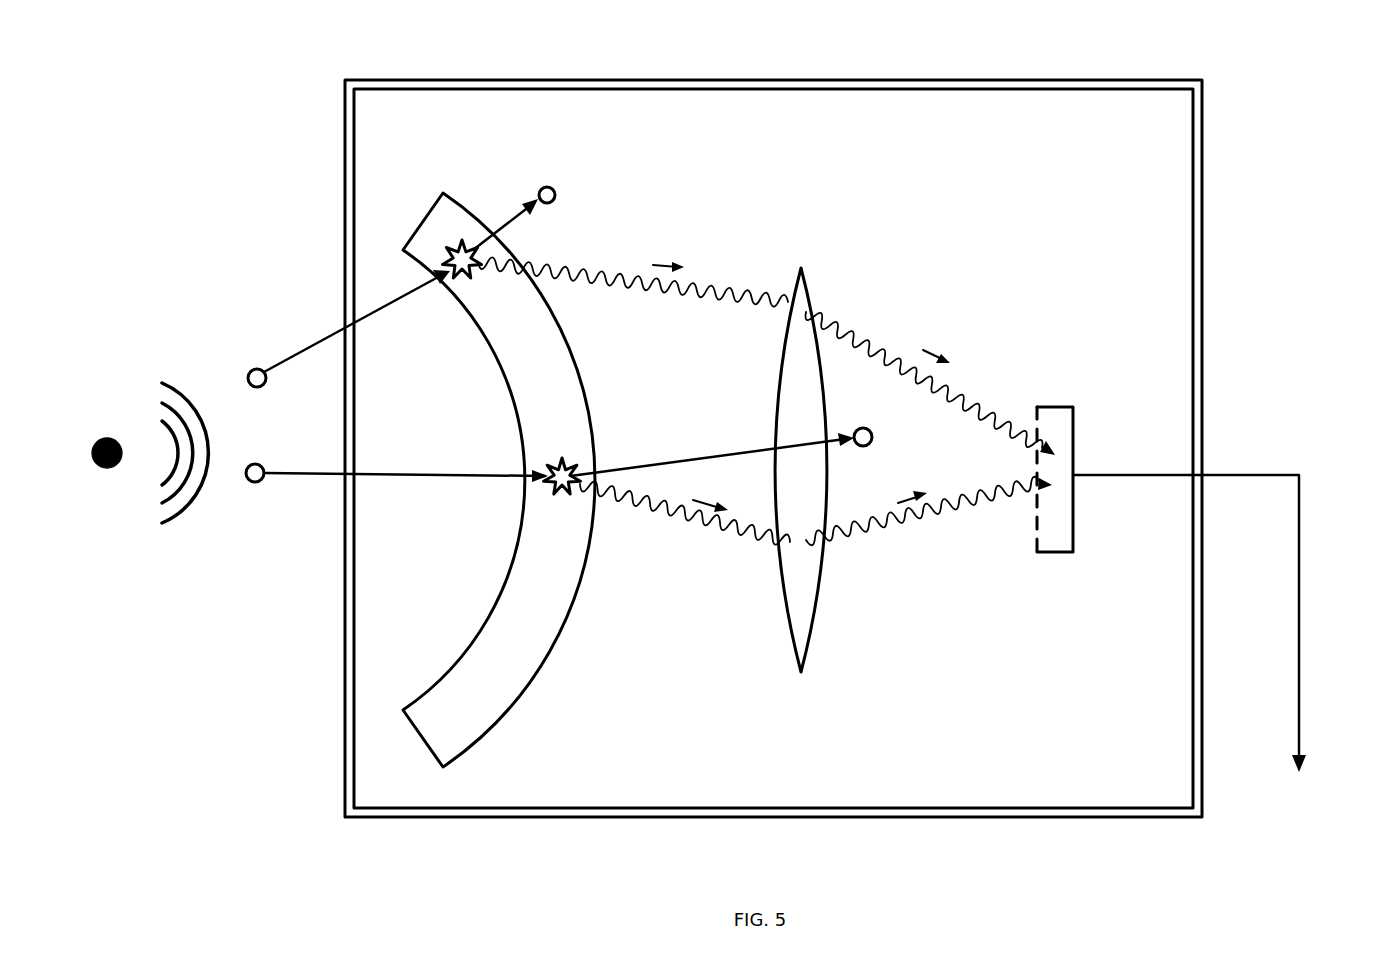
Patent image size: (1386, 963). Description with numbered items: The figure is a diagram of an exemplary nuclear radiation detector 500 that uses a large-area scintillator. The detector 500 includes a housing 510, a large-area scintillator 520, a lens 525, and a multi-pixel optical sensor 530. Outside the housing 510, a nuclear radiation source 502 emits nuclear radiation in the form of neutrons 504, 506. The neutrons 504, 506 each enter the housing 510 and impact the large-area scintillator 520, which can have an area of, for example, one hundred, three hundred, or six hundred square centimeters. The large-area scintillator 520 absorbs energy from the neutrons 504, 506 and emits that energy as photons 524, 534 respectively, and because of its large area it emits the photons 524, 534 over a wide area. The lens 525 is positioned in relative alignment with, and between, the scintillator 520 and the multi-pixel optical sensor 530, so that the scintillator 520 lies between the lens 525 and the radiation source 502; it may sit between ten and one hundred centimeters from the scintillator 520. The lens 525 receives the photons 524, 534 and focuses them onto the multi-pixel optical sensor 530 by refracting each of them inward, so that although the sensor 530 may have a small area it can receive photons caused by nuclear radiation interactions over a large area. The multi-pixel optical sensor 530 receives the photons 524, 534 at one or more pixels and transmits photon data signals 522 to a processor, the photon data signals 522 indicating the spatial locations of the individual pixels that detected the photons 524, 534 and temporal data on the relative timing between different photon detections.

The nuclear radiation detector 500 is at (255, 46).
The nuclear radiation source 502 is at (107, 467).
The neutron 504 is at (256, 482).
The neutron 506 is at (250, 372).
The housing 510 is at (748, 79).
The large-area scintillator 520 is at (428, 232).
The photon data signals 522 is at (1332, 770).
The photon 524 is at (660, 497).
The lens 525 is at (810, 282).
The multi-pixel optical sensor 530 is at (1057, 406).
The photon 534 is at (598, 272).